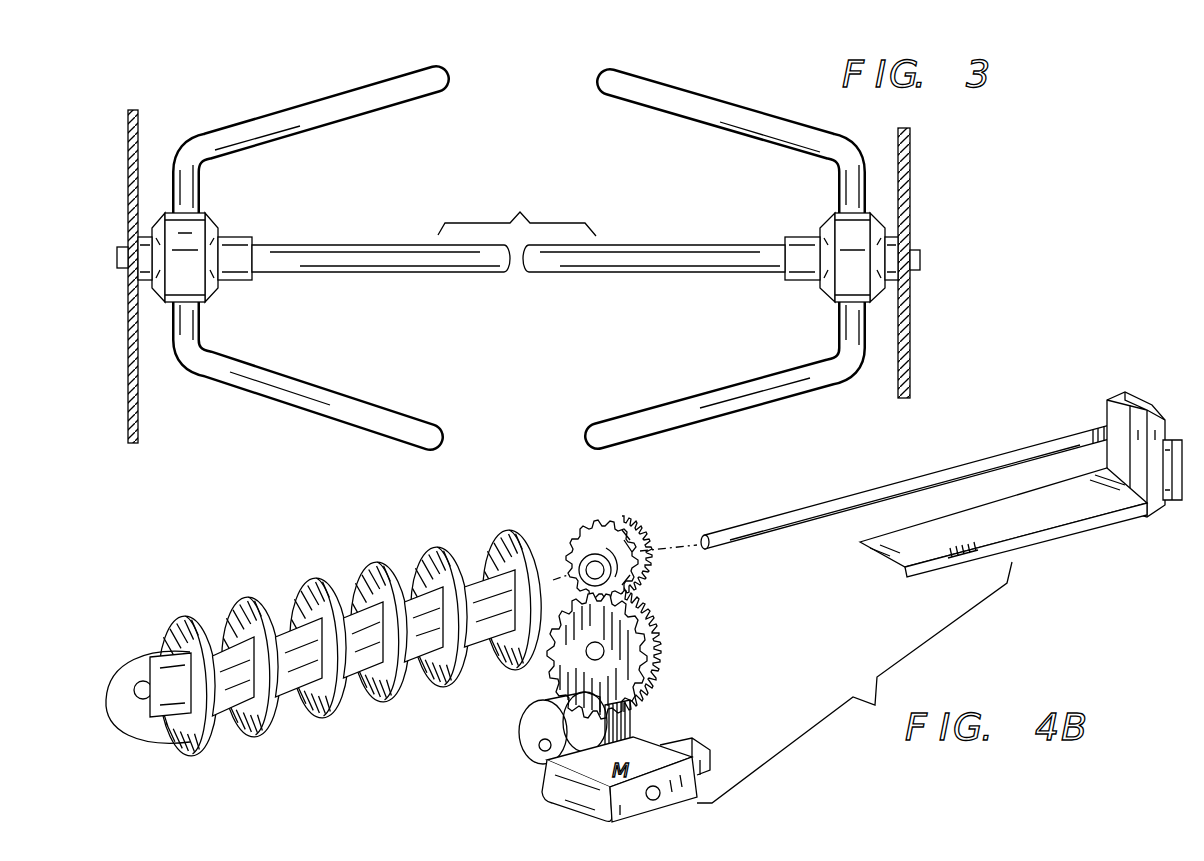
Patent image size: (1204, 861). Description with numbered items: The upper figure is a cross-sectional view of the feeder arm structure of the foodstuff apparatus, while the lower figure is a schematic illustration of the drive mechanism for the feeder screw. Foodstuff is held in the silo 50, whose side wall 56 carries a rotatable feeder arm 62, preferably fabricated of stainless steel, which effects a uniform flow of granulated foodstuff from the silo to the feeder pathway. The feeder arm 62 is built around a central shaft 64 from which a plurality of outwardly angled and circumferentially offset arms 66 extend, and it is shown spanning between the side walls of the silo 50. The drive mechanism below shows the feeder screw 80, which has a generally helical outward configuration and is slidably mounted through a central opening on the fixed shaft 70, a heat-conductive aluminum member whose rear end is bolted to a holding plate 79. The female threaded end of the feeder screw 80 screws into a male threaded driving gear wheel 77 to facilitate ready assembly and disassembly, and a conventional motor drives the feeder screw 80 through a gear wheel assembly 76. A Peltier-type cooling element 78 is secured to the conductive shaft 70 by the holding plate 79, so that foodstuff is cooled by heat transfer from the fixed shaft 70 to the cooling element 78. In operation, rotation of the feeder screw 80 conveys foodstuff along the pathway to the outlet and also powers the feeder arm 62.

In FIG. 3, the silo 50 is at (916, 183).
In FIG. 3, the side wall 56 is at (128, 183).
In FIG. 3, the feeder arm 62 is at (738, 98).
In FIG. 3, the central shaft 64 is at (620, 266).
In FIG. 3, the arms 66 is at (420, 430).
In FIG. 4B, the fixed shaft 70 is at (813, 513).
In FIG. 4B, the gear wheel assembly 76 is at (670, 676).
In FIG. 4B, the driving gear wheel 77 is at (641, 492).
In FIG. 4B, the cooling element 78 is at (1182, 498).
In FIG. 4B, the holding plate 79 is at (1115, 410).
In FIG. 4B, the feeder screw 80 is at (322, 581).